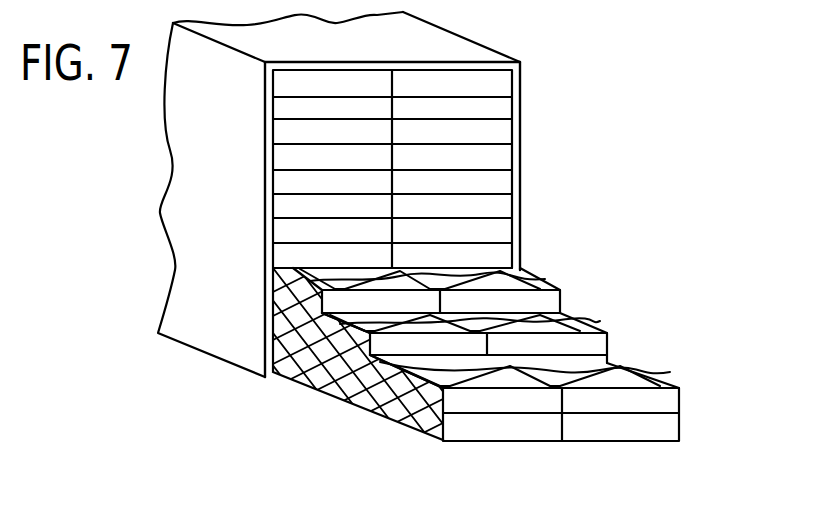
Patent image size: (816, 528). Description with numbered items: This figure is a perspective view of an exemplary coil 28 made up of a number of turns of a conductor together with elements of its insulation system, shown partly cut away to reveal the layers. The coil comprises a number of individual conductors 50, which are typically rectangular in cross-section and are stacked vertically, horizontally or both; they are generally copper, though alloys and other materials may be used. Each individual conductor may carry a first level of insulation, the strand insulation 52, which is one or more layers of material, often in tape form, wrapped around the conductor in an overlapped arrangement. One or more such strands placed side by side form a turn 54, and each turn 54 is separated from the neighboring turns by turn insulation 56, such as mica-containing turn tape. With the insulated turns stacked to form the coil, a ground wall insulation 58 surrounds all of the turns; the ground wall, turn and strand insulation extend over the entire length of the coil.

The tray magazine assembly 28 is at (553, 81).
The conductors 50 is at (495, 135).
The strand insulation 52 is at (600, 365).
The turn 54 is at (572, 300).
The turn insulation 56 is at (318, 277).
The ground wall insulation 58 is at (234, 173).